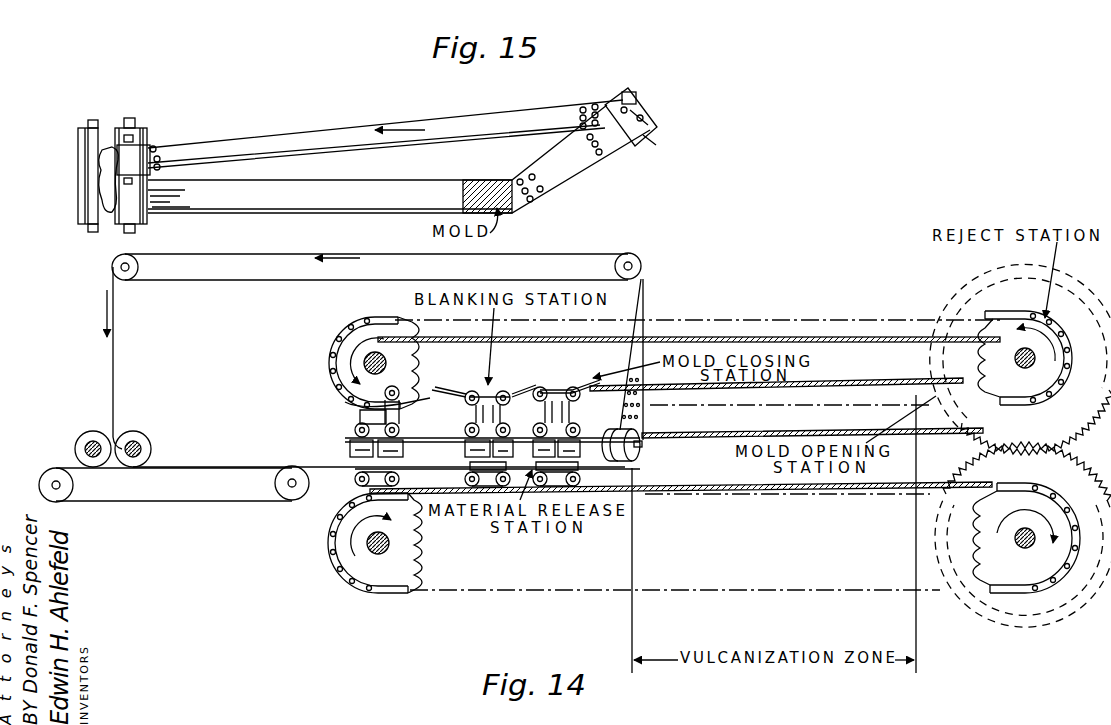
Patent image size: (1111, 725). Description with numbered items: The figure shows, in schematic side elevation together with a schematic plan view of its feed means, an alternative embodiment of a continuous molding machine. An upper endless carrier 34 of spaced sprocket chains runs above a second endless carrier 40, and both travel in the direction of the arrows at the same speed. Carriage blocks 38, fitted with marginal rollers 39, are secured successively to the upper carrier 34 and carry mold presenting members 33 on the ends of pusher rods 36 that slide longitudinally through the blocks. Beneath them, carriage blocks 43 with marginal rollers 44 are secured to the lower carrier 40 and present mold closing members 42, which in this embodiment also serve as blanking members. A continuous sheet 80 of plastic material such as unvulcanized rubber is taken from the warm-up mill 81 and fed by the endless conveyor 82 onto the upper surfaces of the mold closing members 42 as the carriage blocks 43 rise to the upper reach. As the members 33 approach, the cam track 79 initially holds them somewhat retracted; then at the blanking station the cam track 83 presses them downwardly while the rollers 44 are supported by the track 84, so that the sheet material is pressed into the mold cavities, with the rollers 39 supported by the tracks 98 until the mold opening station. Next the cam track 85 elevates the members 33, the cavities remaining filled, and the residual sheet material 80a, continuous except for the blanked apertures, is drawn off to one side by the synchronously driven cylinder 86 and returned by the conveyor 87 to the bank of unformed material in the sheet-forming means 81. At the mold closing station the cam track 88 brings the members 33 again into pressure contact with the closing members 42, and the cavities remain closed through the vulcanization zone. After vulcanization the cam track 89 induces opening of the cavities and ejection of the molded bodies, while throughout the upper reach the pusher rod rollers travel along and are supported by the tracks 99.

In FIG. 14, the mold presenting members 33 is at (350, 453).
In FIG. 14, the upper endless carrier 34 is at (905, 313).
In FIG. 14, the pusher rods 36 is at (396, 413).
In FIG. 14, the carriage blocks 38 is at (370, 424).
In FIG. 14, the marginal rollers 39 is at (356, 430).
In FIG. 14, the second endless carrier 40 is at (838, 588).
In FIG. 14, the mold closing members 42 is at (588, 466).
In FIG. 14, the carriage blocks 43 is at (497, 476).
In FIG. 14, the marginal rollers 44 is at (466, 479).
In FIG. 14, the cam track 79 is at (334, 356).
In FIG. 15, the continuous sheet 80 is at (336, 208).
In FIG. 14, the continuous sheet 80 is at (338, 468).
In FIG. 15, the residual sheet material 80a is at (434, 125).
In FIG. 15, the warm-up mill 81 is at (82, 208).
In FIG. 14, the warm-up mill 81 is at (148, 434).
In FIG. 14, the endless conveyor 82 is at (192, 505).
In FIG. 14, the cam track 83 is at (478, 392).
In FIG. 14, the track 84 is at (716, 492).
In FIG. 14, the cam track 85 is at (560, 396).
In FIG. 15, the synchronously driven cylinder 86 is at (627, 142).
In FIG. 14, the synchronously driven cylinder 86 is at (644, 446).
In FIG. 14, the conveyor 87 is at (283, 283).
In FIG. 14, the cam track 88 is at (820, 386).
In FIG. 14, the cam track 89 is at (1058, 392).
In FIG. 14, the tracks 98 is at (780, 434).
In FIG. 14, the tracks 99 is at (860, 336).